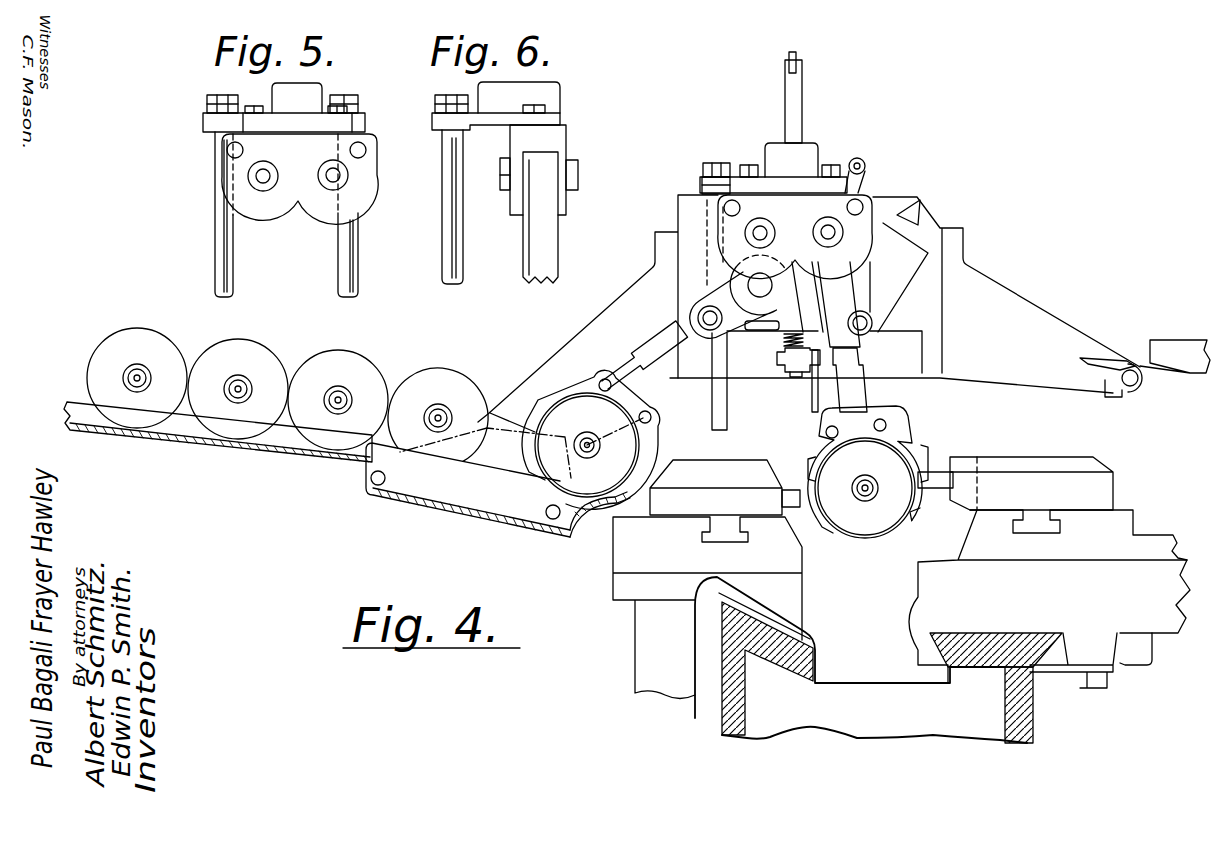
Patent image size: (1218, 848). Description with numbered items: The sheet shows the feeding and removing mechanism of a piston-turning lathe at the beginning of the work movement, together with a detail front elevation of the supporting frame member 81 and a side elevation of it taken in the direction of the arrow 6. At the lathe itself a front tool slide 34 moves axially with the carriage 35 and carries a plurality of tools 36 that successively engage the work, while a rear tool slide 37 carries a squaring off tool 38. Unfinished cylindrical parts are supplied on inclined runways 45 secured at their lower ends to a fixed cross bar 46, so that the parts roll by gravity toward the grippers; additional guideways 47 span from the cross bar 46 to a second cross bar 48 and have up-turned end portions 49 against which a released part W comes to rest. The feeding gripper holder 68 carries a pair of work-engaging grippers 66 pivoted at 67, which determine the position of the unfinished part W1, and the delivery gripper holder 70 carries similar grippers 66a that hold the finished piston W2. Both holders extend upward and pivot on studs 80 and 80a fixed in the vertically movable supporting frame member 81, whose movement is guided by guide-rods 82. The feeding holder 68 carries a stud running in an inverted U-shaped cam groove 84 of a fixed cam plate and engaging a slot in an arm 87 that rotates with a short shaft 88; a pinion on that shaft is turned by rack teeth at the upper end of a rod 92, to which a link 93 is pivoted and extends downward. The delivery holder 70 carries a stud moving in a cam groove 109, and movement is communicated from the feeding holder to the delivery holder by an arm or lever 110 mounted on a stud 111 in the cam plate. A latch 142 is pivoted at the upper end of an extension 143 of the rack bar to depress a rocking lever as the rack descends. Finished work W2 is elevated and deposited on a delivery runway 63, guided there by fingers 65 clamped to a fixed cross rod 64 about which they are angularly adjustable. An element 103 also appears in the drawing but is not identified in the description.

In FIG. 5, the arrow 6 is at (195, 188).
In FIG. 4, the front tool slide 34 is at (716, 469).
In FIG. 4, the carriage 35 is at (767, 609).
In FIG. 4, the tools 36 is at (793, 490).
In FIG. 4, the rear tool slide 37 is at (1030, 458).
In FIG. 4, the squaring off tool 38 is at (940, 476).
In FIG. 4, the runways or guides 45 is at (271, 441).
In FIG. 4, the fixed cross bar 46 is at (372, 481).
In FIG. 4, the additional guideways 47 is at (457, 498).
In FIG. 4, the second cross bar 48 is at (550, 515).
In FIG. 4, the up-turned end portions 49 is at (598, 501).
In FIG. 4, the delivery stand or runway 63 is at (1176, 350).
In FIG. 4, the cross rod 64 is at (1141, 388).
In FIG. 4, the fingers 65 is at (1090, 360).
In FIG. 4, the work-engaging grippers 66 is at (556, 394).
In FIG. 4, the grippers 66a is at (817, 534).
In FIG. 4, the pivot 67 is at (607, 372).
In FIG. 6, the feeding gripper holder 68 is at (548, 246).
In FIG. 4, the feeding gripper holder 68 is at (652, 352).
In FIG. 4, the delivery gripper holder 70 is at (860, 397).
In FIG. 5, the stud 80 is at (263, 182).
In FIG. 4, the stud 80 is at (763, 238).
In FIG. 5, the stud 80a is at (332, 175).
In FIG. 4, the stud 80a is at (827, 232).
In FIG. 5, the supporting frame member 81 is at (369, 172).
In FIG. 6, the supporting frame member 81 is at (545, 142).
In FIG. 5, the guide-rods 82 is at (218, 250).
In FIG. 6, the guide-rods 82 is at (446, 249).
In FIG. 4, the guide-rods 82 is at (712, 406).
In FIG. 4, the inverted U-shaped cam groove 84 is at (714, 258).
In FIG. 4, the arm 87 is at (762, 306).
In FIG. 4, the stud or short shaft 88 is at (760, 285).
In FIG. 4, the rod 92 is at (793, 378).
In FIG. 4, the link 93 is at (811, 412).
In FIG. 4, the pad 103 is at (758, 331).
In FIG. 4, the cam groove 109 is at (862, 283).
In FIG. 4, the arm or lever 110 is at (862, 181).
In FIG. 4, the stud 111 is at (861, 164).
In FIG. 4, the latch 142 is at (802, 50).
In FIG. 4, the extension 143 is at (796, 108).
In FIG. 4, the cylindrical part W is at (221, 322).
In FIG. 4, the unfinished part W1 is at (560, 415).
In FIG. 4, the finished piston W2 is at (872, 527).